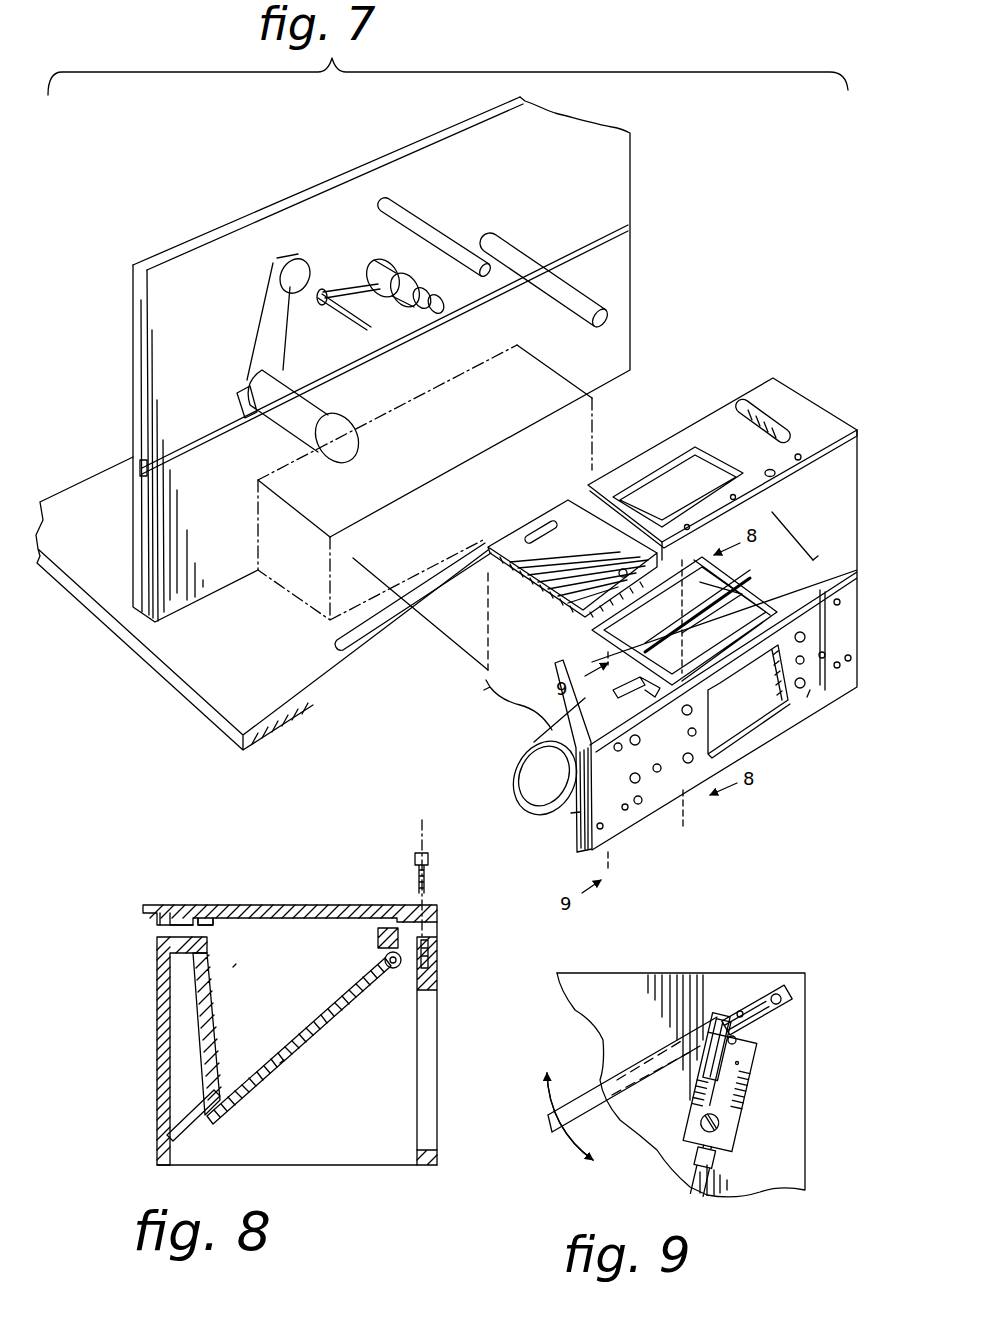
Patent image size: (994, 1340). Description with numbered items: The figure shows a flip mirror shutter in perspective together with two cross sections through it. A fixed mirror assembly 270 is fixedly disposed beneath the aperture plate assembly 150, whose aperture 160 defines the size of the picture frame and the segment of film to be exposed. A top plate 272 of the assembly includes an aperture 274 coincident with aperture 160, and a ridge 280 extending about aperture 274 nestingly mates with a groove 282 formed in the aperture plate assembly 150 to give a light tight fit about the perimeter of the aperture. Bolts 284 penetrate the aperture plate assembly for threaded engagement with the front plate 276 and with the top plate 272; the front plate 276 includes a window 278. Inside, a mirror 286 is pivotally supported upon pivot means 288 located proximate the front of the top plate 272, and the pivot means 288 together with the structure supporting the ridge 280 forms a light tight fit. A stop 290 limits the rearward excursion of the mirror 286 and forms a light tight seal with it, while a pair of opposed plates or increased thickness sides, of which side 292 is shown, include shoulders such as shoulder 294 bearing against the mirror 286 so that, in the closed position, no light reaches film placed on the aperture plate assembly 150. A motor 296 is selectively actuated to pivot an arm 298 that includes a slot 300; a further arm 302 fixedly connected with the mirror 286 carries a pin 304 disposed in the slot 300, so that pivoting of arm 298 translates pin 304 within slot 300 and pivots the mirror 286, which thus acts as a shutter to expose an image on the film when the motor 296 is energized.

In FIG. 7, the aperture plate assembly 150 is at (800, 403).
In FIG. 8, the aperture plate assembly 150 is at (290, 907).
In FIG. 7, the aperture 160 is at (697, 445).
In FIG. 7, the fixed mirror assembly 270 is at (813, 670).
In FIG. 7, the top plate 272 is at (813, 560).
In FIG. 7, the aperture 274 is at (708, 596).
In FIG. 8, the aperture 274 is at (385, 935).
In FIG. 7, the front plate 276 is at (807, 697).
In FIG. 8, the front plate 276 is at (437, 963).
In FIG. 7, the window 278 is at (790, 700).
In FIG. 8, the window 278 is at (435, 1150).
In FIG. 8, the ridge 280 is at (207, 918).
In FIG. 8, the groove 282 is at (188, 925).
In FIG. 8, the bolts 284 is at (427, 870).
In FIG. 8, the mirror 286 is at (307, 1040).
In FIG. 9, the mirror 286 is at (590, 1095).
In FIG. 8, the pivot means 288 is at (385, 958).
In FIG. 8, the stop 290 is at (193, 1132).
In FIG. 7, the side 292 is at (717, 575).
In FIG. 8, the side 292 is at (233, 967).
In FIG. 8, the shoulder 294 is at (280, 1063).
In FIG. 7, the motor 296 is at (547, 803).
In FIG. 9, the arm 298 is at (740, 1110).
In FIG. 9, the slot 300 is at (733, 1067).
In FIG. 9, the arm 302 is at (750, 1030).
In FIG. 9, the pin 304 is at (740, 1012).